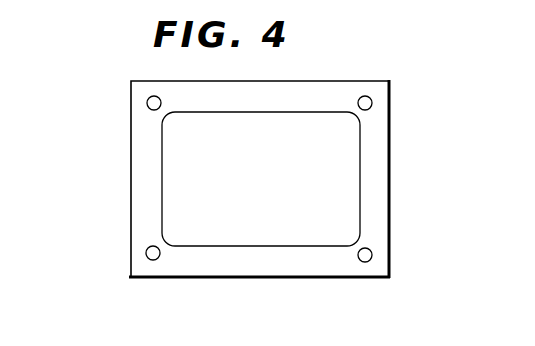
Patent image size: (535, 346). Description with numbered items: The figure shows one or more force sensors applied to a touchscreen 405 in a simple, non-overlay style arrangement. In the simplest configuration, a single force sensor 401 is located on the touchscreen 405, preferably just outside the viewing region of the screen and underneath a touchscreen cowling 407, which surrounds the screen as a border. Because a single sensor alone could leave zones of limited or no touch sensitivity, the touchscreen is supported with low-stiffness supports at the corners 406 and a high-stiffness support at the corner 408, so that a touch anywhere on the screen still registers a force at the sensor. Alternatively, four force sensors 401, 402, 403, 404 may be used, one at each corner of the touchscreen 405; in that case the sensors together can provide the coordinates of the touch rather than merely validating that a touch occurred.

The force sensor 401 is at (372, 103).
The force sensor 402 is at (147, 103).
The force sensor 403 is at (146, 253).
The force sensor 404 is at (372, 255).
The touchscreen 405 is at (283, 182).
The corners with low-stiffness supports 406 is at (135, 85).
The touchscreen cowling 407 is at (377, 180).
The corner with high-stiffness support 408 is at (131, 277).